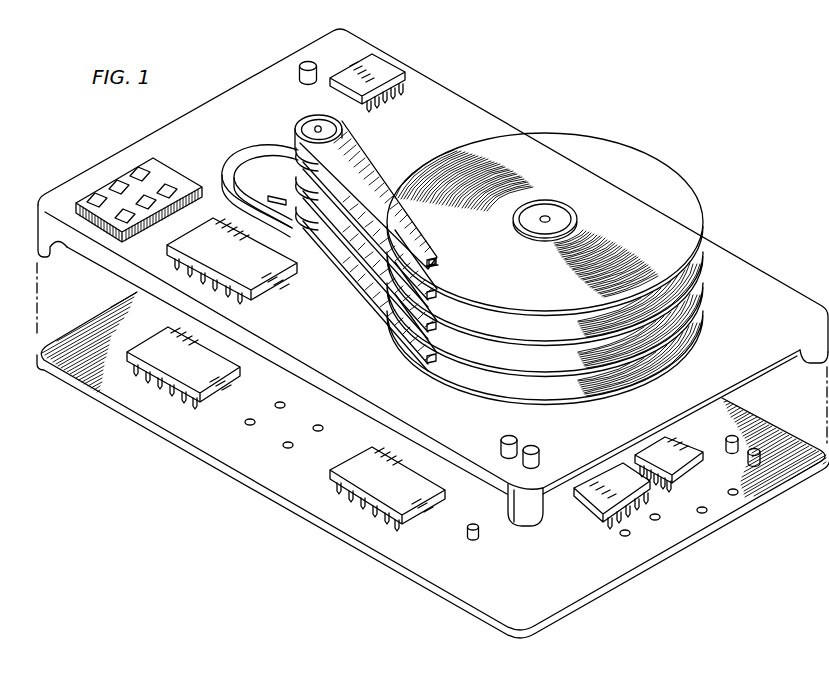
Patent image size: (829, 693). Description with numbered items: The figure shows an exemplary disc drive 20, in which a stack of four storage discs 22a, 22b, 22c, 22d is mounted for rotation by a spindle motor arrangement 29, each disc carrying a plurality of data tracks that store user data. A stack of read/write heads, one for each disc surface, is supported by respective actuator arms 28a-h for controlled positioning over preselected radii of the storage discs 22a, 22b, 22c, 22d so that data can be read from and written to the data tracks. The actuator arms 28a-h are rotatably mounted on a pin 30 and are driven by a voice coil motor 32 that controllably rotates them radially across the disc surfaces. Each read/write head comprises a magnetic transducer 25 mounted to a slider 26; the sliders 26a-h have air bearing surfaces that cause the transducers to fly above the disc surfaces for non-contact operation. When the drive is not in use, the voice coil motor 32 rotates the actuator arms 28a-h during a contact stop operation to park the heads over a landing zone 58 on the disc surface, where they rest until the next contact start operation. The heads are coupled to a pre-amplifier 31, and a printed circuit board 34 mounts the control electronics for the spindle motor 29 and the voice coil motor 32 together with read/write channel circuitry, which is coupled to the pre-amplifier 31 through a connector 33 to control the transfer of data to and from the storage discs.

The disc drive 20 is at (100, 127).
The storage disc 22a is at (704, 221).
The storage disc 22b is at (704, 252).
The storage disc 22c is at (704, 285).
The storage disc 22d is at (704, 313).
The magnetic transducer 25 is at (440, 263).
The slider 26 is at (437, 260).
The sliders 26a-h is at (425, 254).
The actuator arms 28a-h is at (365, 156).
The spindle motor arrangement 29 is at (546, 215).
The pin 30 is at (306, 121).
The pre-amplifier 31 is at (282, 272).
The voice coil motor 32 is at (258, 150).
The connector 33 is at (172, 176).
The printed circuit board 34 is at (538, 593).
The landing zone 58 is at (578, 213).